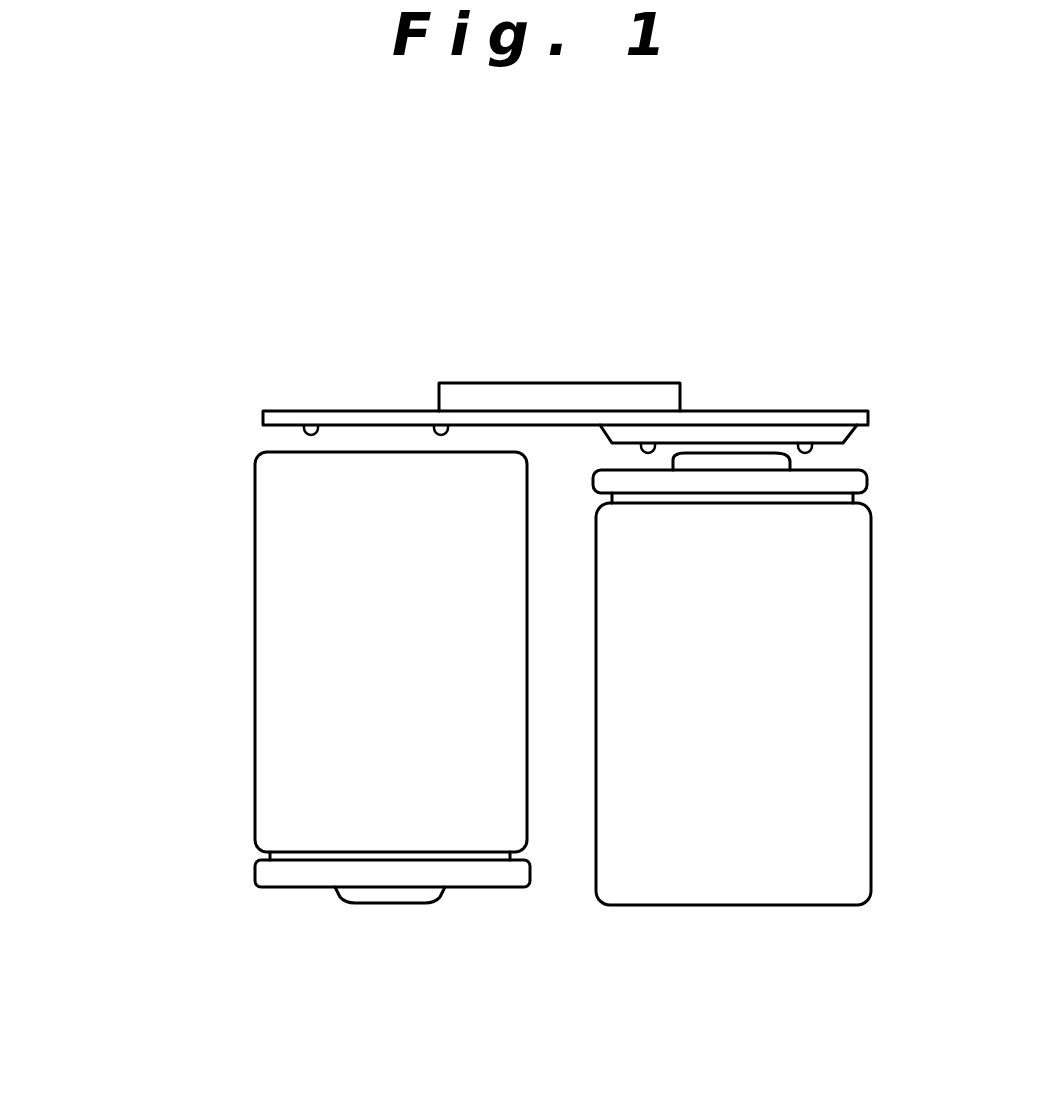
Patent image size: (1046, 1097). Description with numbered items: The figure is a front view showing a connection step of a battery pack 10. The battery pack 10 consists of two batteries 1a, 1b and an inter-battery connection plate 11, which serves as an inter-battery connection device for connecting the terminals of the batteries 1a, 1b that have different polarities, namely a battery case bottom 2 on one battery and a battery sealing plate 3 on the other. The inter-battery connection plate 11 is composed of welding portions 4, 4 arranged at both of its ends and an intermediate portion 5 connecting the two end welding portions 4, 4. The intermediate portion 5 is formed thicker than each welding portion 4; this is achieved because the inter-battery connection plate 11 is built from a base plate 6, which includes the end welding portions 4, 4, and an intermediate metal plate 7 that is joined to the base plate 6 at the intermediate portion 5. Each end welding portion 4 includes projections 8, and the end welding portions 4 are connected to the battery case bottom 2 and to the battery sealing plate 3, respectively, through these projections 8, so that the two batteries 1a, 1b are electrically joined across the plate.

The battery 1a is at (285, 707).
The battery 1b is at (828, 703).
The battery case bottom 2 is at (300, 452).
The battery sealing plate 3 is at (757, 464).
The welding portion 4 is at (377, 411).
The intermediate portion 5 is at (556, 383).
The base plate 6 is at (725, 420).
The intermediate metal plate 7 is at (609, 395).
The projections 8 is at (309, 427).
The battery pack 10 is at (195, 581).
The inter-battery connection plate 11 is at (793, 222).